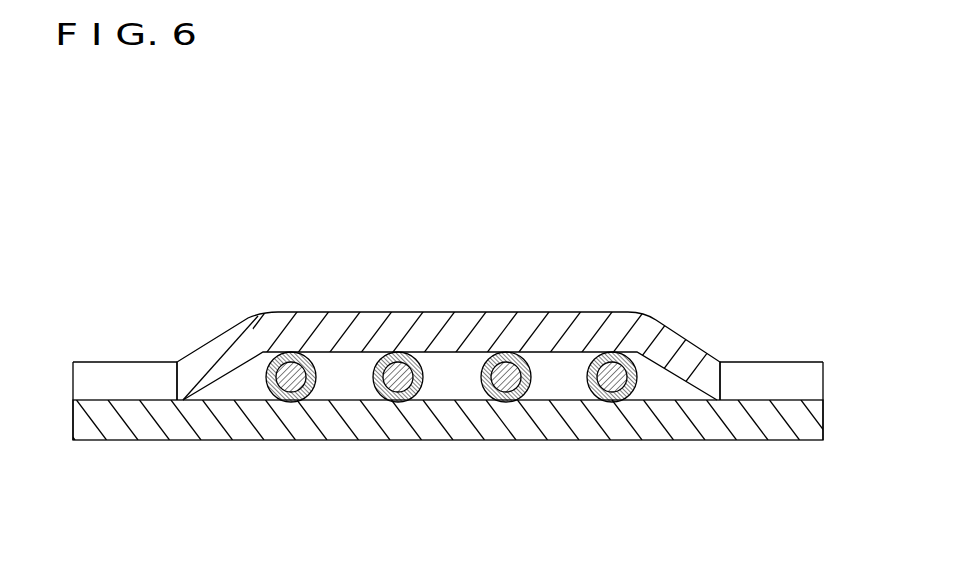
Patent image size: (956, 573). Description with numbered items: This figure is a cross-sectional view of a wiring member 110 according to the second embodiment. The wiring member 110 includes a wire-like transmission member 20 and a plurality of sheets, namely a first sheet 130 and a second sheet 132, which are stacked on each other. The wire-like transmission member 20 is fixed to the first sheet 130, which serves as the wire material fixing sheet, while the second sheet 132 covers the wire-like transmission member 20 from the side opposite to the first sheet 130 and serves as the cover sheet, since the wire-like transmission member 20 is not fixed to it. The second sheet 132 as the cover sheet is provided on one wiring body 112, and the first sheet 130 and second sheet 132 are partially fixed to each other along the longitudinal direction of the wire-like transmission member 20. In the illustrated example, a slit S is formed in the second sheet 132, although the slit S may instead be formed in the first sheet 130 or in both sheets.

The wiring member 110 is at (154, 209).
The wiring body 112 is at (518, 494).
The first sheet 130 is at (498, 430).
The second sheet 132 is at (460, 322).
The wire-like transmission member 20 is at (487, 393).
The slit S is at (176, 372).